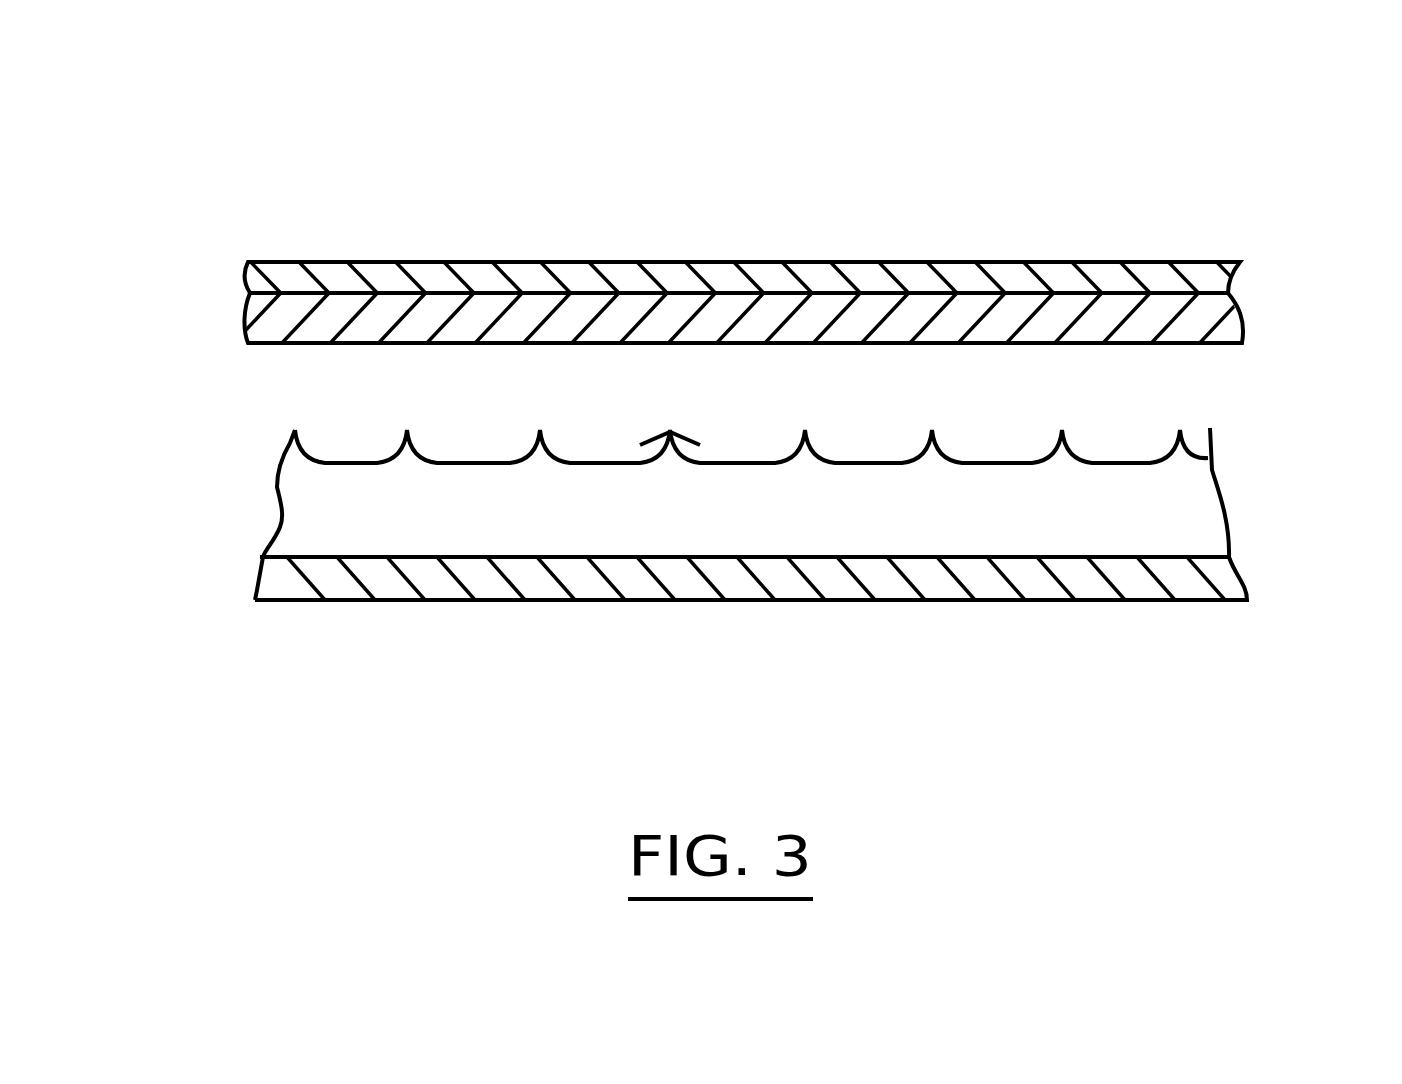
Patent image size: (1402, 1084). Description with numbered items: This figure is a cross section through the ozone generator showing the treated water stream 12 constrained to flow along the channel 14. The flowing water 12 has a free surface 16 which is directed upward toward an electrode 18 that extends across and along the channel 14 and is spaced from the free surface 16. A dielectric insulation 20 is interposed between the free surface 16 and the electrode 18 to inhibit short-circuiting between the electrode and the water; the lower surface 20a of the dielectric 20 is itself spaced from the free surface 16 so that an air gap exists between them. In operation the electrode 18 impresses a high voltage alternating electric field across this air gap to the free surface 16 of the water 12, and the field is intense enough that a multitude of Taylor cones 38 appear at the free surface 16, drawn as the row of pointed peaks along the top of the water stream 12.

The flow of water 12 is at (340, 528).
The channel 14 is at (1047, 582).
The free surface 16 is at (373, 455).
The electrode 18 is at (450, 263).
The dielectric insulation 20 is at (237, 310).
The lower surface of dielectric 20a is at (1205, 342).
The Taylor cones 38 is at (617, 463).